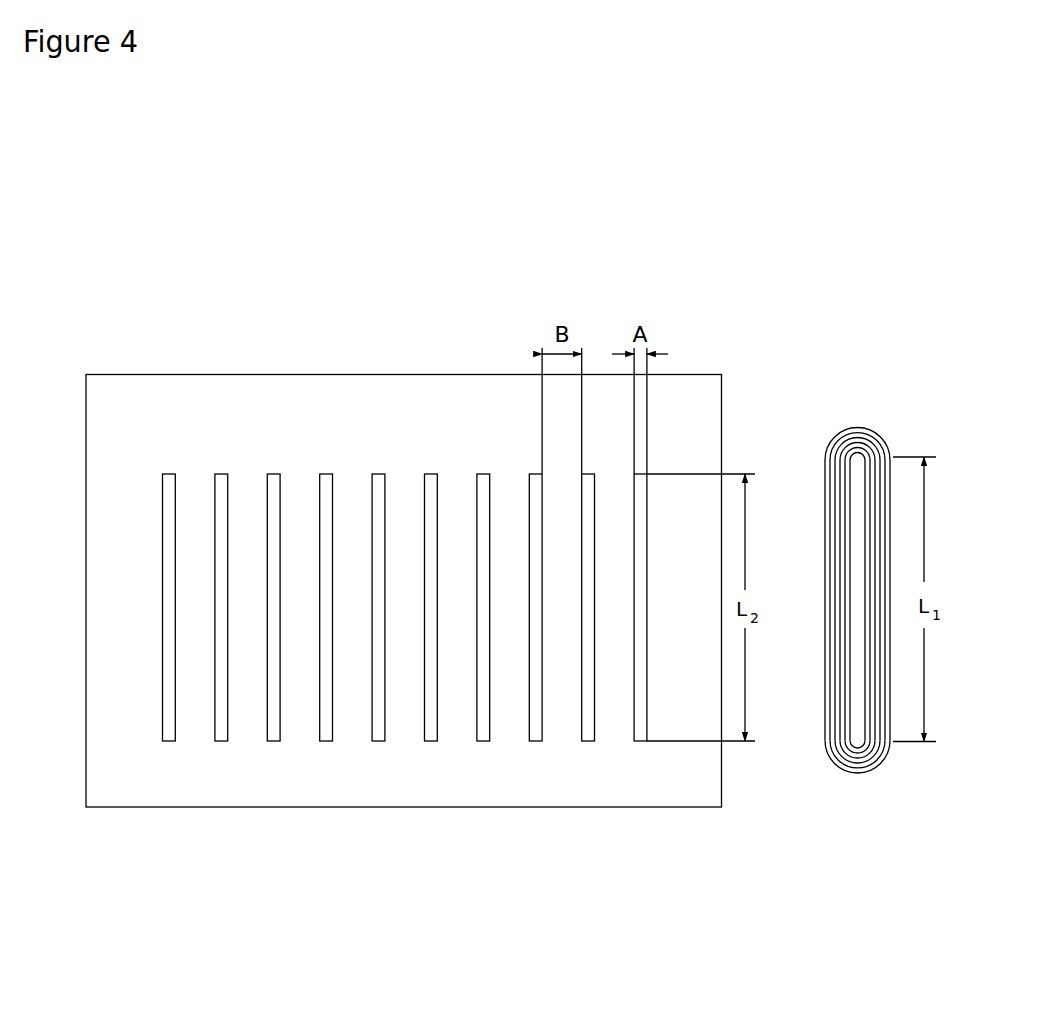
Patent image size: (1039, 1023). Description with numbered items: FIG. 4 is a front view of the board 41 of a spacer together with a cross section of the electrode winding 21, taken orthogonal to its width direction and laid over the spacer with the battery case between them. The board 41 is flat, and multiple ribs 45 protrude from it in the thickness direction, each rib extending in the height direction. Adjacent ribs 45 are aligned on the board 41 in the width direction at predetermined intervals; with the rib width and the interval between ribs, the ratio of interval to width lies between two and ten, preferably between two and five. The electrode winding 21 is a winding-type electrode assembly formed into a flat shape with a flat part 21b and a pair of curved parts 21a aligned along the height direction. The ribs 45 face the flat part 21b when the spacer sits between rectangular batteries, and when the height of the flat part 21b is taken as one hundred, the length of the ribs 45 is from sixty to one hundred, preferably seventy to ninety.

The board 41 is at (619, 790).
The ribs 45 is at (430, 733).
The electrode winding 21 is at (855, 591).
The curved parts 21a is at (857, 428).
The flat part 21b is at (825, 583).